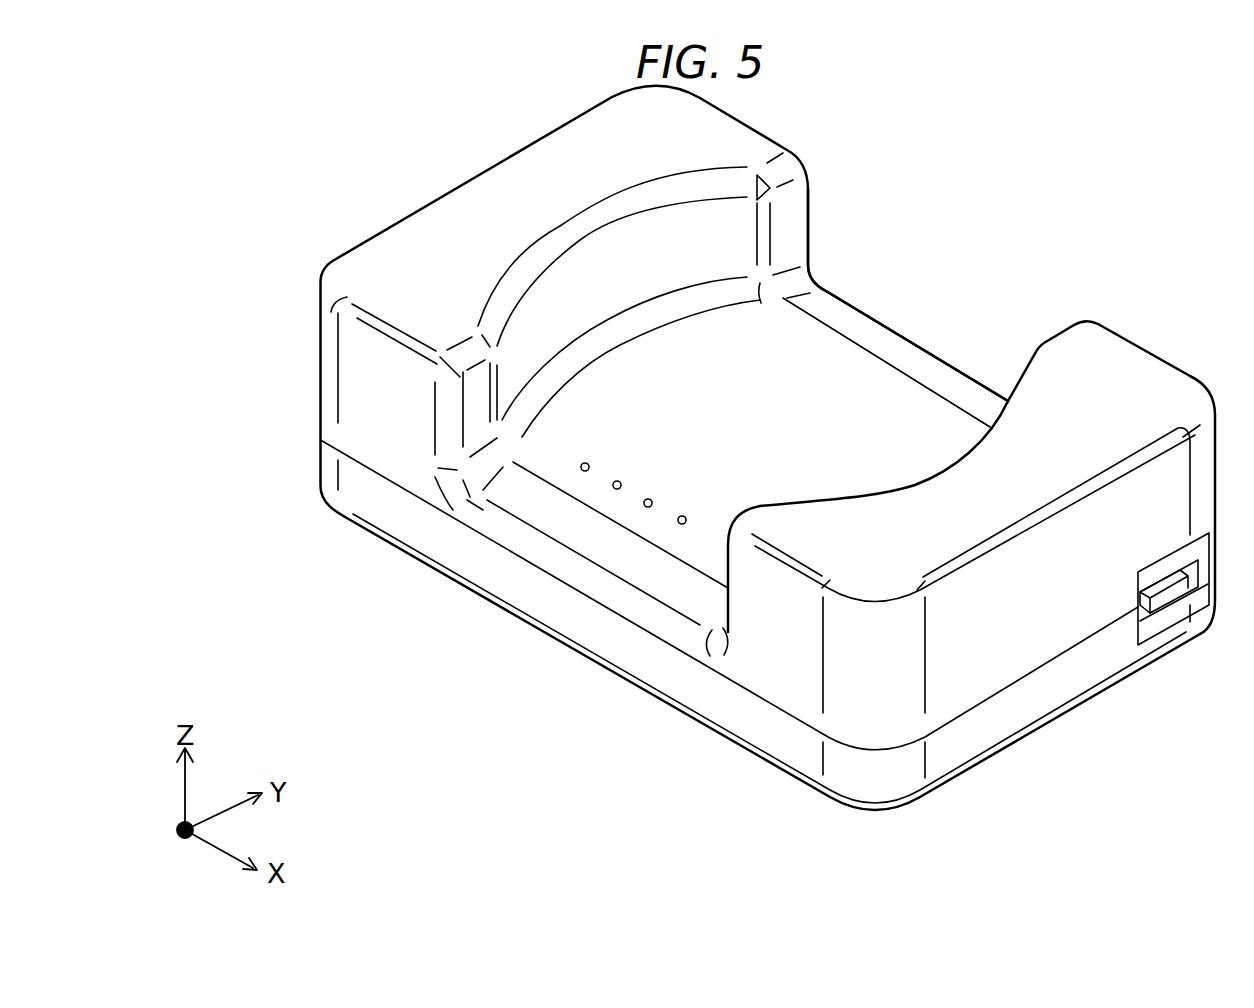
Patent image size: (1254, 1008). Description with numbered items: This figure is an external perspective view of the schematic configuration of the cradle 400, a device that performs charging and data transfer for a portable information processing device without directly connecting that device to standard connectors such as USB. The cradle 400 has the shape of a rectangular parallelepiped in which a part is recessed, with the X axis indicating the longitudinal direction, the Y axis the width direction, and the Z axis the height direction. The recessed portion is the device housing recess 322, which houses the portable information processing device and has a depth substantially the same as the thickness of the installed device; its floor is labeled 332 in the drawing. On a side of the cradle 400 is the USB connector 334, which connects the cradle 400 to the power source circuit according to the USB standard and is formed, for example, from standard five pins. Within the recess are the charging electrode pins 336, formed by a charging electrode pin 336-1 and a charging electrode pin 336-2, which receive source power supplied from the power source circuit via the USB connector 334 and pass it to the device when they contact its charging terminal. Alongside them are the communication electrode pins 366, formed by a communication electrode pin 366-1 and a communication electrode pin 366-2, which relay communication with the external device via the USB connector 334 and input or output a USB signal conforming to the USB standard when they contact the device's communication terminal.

The cradle 400 is at (1125, 187).
The device housing recess 322 is at (911, 297).
The bottom surface of recess 332 is at (872, 415).
The USB connector 334 is at (1173, 586).
The communication electrode pins 366 is at (378, 711).
The communication electrode pin 366-1 is at (582, 472).
The communication electrode pin 366-2 is at (614, 490).
The charging electrode pins 336 is at (446, 770).
The charging electrode pin 336-1 is at (645, 508).
The charging electrode pin 336-2 is at (679, 525).